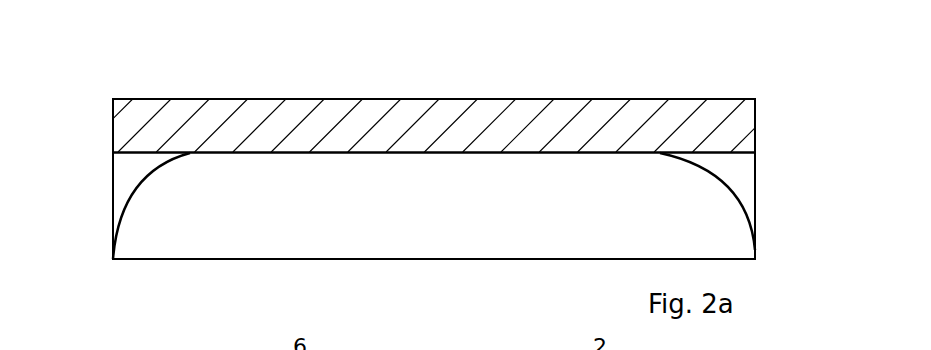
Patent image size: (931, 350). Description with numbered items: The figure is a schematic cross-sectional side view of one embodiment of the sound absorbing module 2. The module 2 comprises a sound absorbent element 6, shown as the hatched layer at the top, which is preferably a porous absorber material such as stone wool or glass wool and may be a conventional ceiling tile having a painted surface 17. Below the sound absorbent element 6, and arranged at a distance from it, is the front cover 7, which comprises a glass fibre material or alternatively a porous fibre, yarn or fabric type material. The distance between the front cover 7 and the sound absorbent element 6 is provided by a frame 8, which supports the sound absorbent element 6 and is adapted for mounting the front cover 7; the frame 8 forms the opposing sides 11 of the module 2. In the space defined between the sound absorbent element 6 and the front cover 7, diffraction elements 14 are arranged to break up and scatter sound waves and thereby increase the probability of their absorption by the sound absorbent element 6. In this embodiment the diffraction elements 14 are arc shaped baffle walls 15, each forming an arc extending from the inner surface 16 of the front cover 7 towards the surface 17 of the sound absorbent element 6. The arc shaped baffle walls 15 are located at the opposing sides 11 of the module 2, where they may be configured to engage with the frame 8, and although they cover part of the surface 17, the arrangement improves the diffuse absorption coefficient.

The sound absorbing module 2 is at (484, 87).
The sound absorbent element 6 is at (190, 118).
The front cover 7 is at (206, 260).
The frame 8 is at (112, 172).
The opposing sides 11 is at (96, 262).
The diffraction element 14 is at (148, 201).
The arc shaped baffle wall 15 is at (190, 154).
The inner surface 16 is at (345, 246).
The surface 17 is at (473, 164).